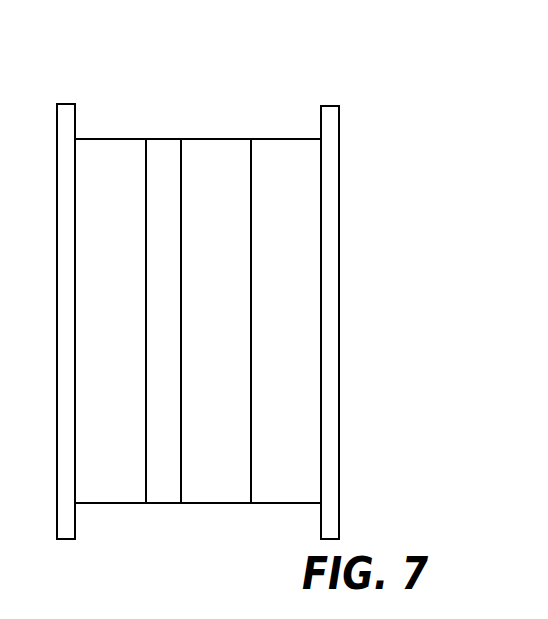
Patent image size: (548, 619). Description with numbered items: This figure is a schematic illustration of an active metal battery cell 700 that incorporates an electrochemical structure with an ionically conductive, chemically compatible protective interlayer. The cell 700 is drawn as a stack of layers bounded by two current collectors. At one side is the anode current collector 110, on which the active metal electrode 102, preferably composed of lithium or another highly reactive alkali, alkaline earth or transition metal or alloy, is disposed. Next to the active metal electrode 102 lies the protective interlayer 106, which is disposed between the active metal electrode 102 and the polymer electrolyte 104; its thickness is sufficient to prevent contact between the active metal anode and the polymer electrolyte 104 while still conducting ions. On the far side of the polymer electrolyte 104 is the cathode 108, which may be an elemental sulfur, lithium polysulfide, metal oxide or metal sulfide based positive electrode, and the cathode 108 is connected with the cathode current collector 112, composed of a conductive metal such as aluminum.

The battery cell 700 is at (402, 121).
The anode current collector 110 is at (73, 110).
The cathode current collector 112 is at (335, 112).
The active metal electrode 102 is at (106, 155).
The protective interlayer 106 is at (158, 152).
The polymer electrolyte 104 is at (217, 153).
The cathode 108 is at (275, 153).